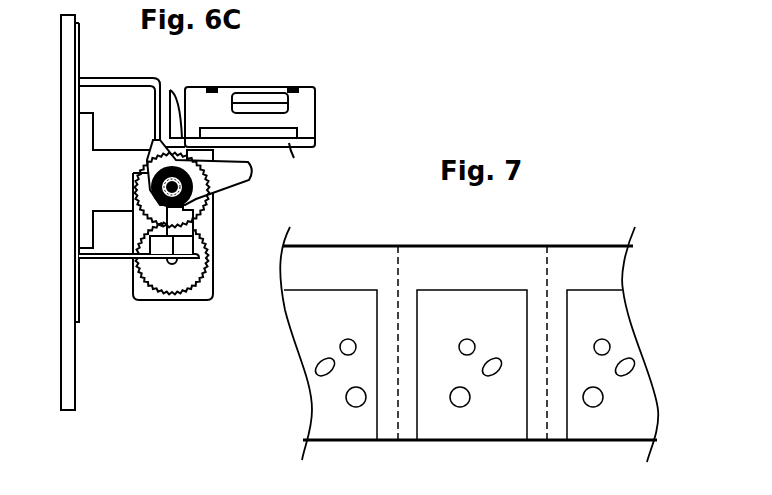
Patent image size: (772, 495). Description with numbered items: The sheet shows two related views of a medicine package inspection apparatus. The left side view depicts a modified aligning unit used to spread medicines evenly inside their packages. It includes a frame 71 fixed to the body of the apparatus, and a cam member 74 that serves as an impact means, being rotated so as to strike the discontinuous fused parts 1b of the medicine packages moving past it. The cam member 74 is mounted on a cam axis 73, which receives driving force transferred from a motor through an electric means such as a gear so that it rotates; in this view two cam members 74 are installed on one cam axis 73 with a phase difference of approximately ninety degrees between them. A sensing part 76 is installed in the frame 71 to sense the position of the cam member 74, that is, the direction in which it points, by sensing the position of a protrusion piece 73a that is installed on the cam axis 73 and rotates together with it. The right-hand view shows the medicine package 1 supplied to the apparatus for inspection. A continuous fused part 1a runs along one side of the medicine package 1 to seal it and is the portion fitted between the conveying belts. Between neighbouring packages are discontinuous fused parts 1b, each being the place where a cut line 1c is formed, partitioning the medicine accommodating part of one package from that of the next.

In FIG. 6C, the frame 71 is at (61, 322).
In FIG. 6C, the cam axis 73 is at (137, 172).
In FIG. 6C, the protrusion piece 73a is at (137, 210).
In FIG. 6C, the cam member 74 is at (147, 162).
In FIG. 6C, the sensing part 76 is at (190, 243).
In FIG. 7, the medicine package 1 is at (613, 207).
In FIG. 7, the continuous fused part 1a is at (472, 260).
In FIG. 7, the discontinuous fused part 1b is at (388, 435).
In FIG. 7, the cut line 1c is at (395, 265).